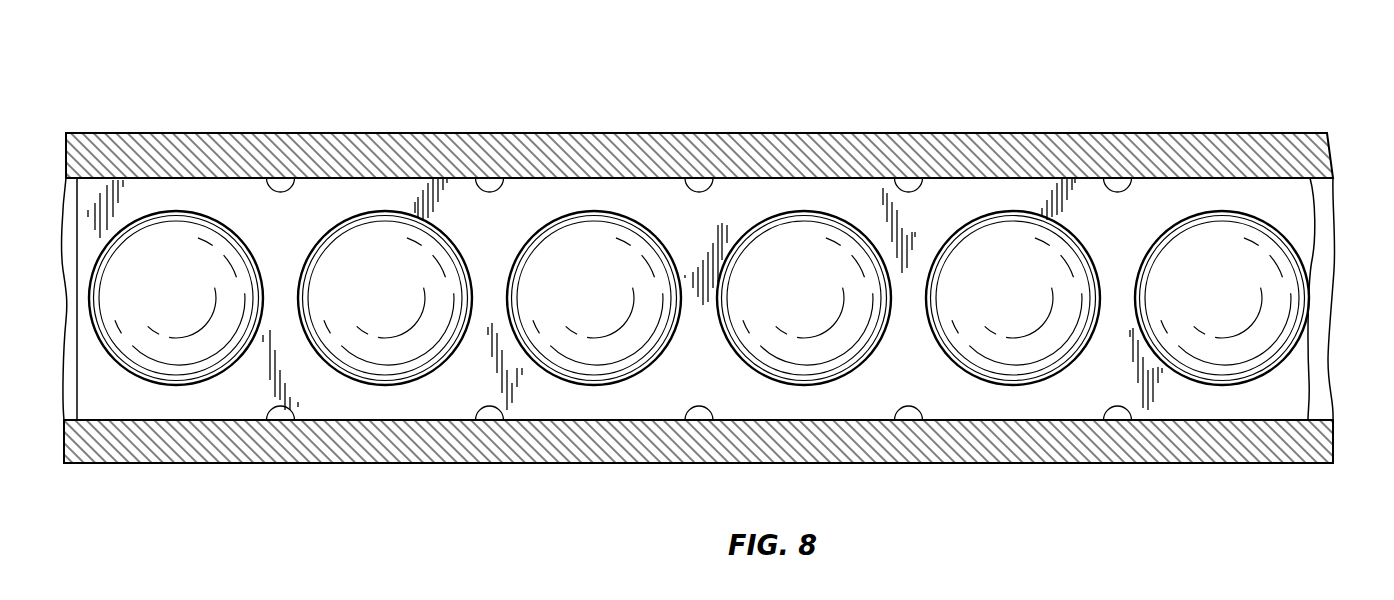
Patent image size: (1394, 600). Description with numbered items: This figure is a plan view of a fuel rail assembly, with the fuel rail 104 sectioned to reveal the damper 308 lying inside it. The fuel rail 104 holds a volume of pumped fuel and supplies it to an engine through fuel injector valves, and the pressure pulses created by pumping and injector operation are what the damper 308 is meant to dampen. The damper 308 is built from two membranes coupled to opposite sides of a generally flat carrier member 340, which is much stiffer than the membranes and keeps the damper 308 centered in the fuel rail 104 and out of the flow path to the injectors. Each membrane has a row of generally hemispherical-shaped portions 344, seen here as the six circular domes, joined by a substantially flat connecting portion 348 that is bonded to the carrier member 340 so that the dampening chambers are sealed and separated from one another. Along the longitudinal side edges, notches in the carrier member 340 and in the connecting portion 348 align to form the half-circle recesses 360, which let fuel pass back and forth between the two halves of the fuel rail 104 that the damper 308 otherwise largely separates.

The fuel rail 104 is at (1232, 142).
The damper 308 is at (1313, 250).
The carrier member 340 is at (788, 188).
The connecting portion 348 is at (625, 294).
The hemispherical-shaped portions 344 is at (159, 309).
The recesses 360 is at (490, 192).